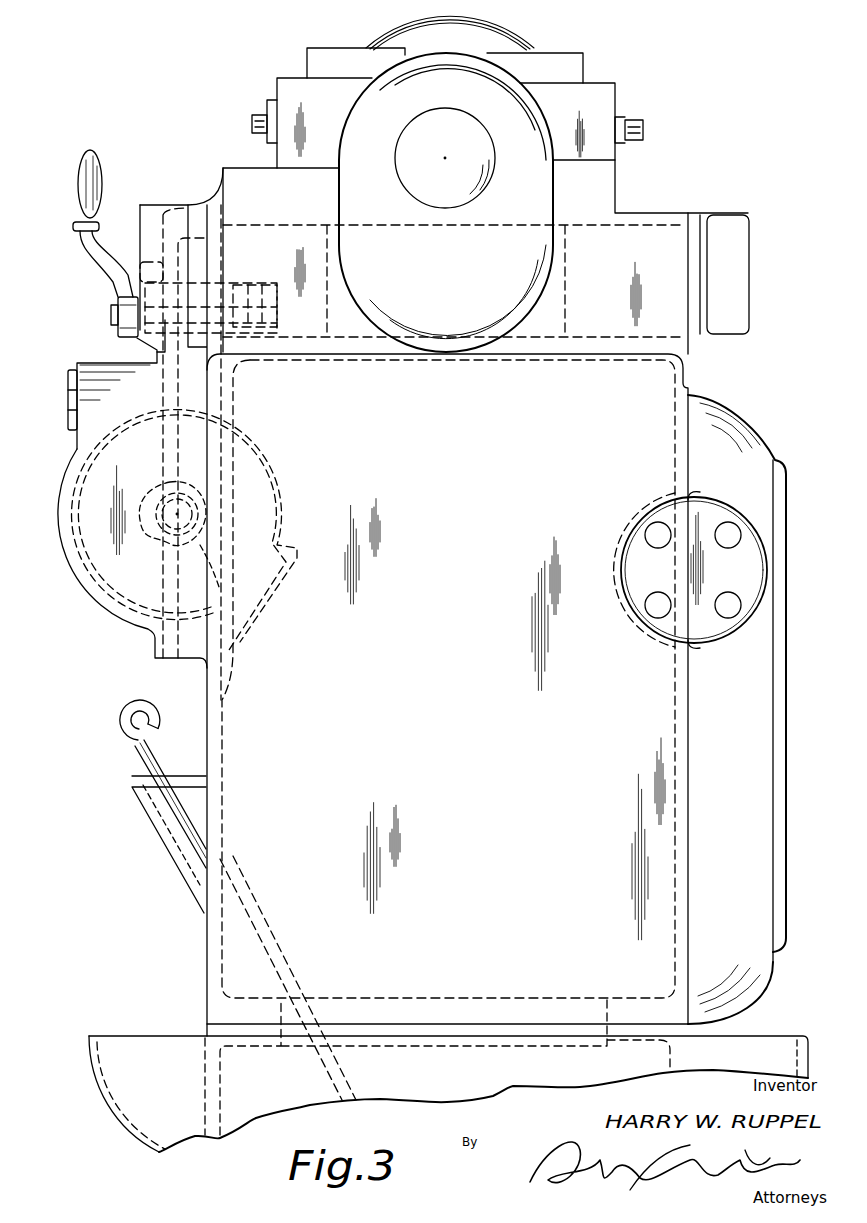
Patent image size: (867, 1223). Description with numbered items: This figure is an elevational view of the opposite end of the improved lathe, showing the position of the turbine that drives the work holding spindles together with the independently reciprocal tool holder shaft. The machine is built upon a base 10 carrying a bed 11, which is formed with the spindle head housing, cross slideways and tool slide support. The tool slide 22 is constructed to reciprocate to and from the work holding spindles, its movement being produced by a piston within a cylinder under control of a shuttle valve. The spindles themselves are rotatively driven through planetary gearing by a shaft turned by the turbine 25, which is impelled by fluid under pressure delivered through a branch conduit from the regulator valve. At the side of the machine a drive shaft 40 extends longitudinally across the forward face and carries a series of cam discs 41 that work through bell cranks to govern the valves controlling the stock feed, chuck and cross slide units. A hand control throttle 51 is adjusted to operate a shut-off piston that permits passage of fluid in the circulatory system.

The base 10 is at (144, 1104).
The bed 11 is at (231, 956).
The tool slide 22 is at (483, 44).
The turbine 25 is at (446, 202).
The drive shaft 40 is at (168, 478).
The cam discs 41 is at (113, 606).
The hand control throttle 51 is at (92, 193).